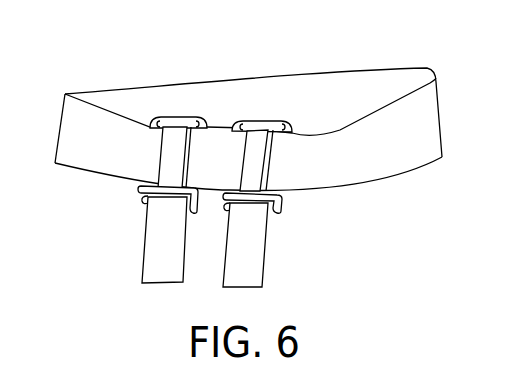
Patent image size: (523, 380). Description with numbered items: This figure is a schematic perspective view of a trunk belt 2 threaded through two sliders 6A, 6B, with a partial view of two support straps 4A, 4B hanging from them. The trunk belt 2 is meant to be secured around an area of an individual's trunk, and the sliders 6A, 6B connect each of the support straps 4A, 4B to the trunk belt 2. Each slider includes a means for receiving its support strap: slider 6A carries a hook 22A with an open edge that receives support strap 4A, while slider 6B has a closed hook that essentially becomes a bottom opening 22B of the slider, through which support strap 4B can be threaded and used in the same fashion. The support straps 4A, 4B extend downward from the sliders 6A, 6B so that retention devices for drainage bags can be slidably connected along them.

The trunk belt 2 is at (368, 88).
The slider 6A is at (176, 140).
The slider 6B is at (260, 137).
The hook 22A is at (141, 198).
The opening 22B is at (280, 207).
The support strap 4A is at (160, 253).
The support strap 4B is at (252, 267).